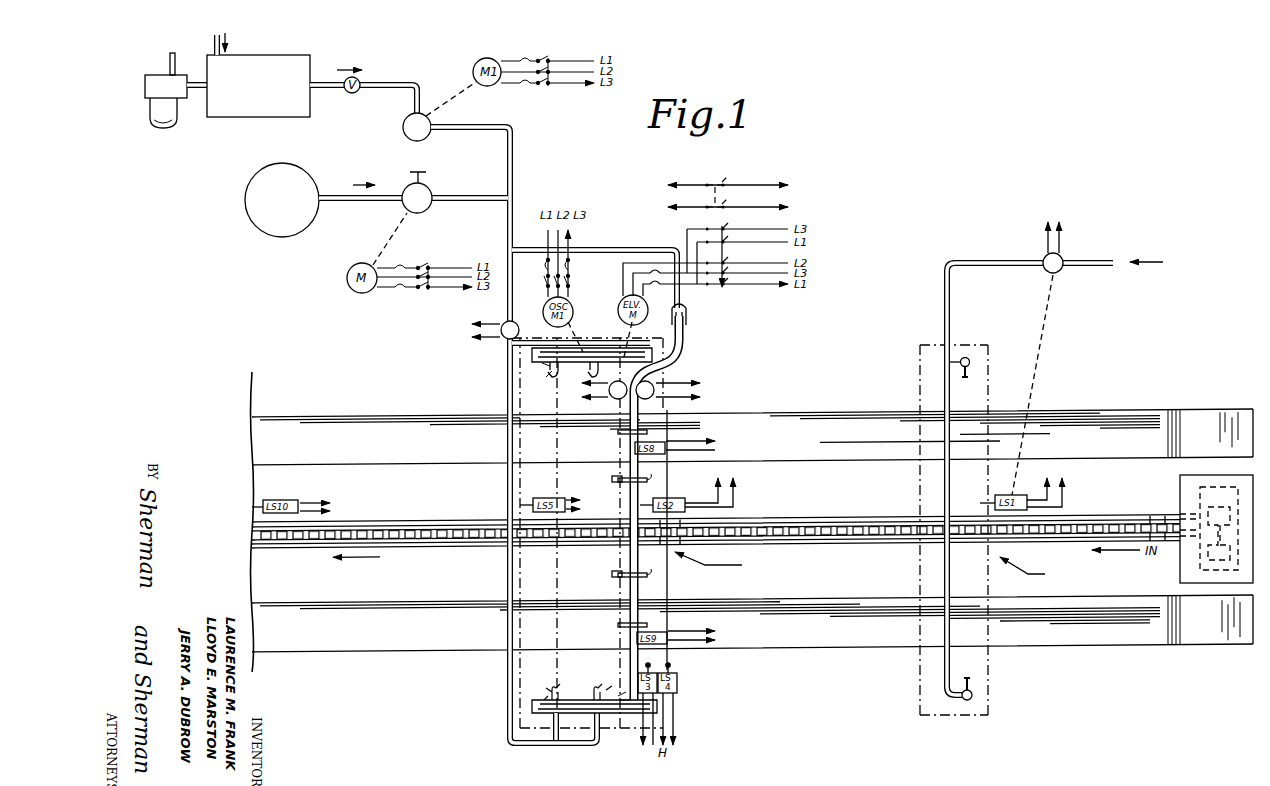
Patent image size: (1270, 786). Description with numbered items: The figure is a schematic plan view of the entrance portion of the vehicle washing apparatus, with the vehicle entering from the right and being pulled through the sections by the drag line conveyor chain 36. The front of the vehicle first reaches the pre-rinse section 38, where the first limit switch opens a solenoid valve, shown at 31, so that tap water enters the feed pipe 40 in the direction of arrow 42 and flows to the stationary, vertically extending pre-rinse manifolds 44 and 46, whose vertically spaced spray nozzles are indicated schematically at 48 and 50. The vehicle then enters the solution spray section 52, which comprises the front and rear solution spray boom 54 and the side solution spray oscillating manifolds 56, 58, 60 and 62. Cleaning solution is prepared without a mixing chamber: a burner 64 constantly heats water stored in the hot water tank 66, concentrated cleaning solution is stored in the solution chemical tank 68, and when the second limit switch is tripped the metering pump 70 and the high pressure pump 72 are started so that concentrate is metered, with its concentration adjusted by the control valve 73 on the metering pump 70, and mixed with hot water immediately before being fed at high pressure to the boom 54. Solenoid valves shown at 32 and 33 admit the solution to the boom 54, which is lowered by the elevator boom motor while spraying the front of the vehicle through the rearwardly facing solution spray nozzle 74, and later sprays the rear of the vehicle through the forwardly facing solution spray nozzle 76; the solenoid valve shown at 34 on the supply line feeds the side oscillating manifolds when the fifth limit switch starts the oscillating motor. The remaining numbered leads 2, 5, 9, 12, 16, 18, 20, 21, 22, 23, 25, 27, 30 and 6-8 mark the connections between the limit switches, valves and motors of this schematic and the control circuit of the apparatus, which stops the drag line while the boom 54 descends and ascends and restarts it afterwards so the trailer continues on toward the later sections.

The burner 64 is at (145, 86).
The hot water tank 66 is at (222, 120).
The solution chemical tank 68 is at (264, 174).
The metering pump 70 is at (430, 192).
The high pressure pump 72 is at (403, 124).
The control valve 73 is at (421, 172).
The solenoid valve 34 is at (510, 330).
The control line 25 is at (477, 337).
The control line 2 is at (755, 297).
The side solution spray oscillating manifold 56 is at (595, 358).
The side solution spray oscillating manifold 58 is at (553, 372).
The solenoid valve 33 is at (618, 390).
The solenoid valve 32 is at (645, 390).
The control line 18 is at (585, 397).
The control line 16 is at (688, 397).
The control line 5 is at (675, 595).
The control line 9 is at (681, 601).
The control line 30 is at (325, 511).
The control line 27 is at (583, 509).
The forwardly facing solution spray nozzle 76 is at (612, 478).
The rearwardly facing solution spray nozzle 74 is at (640, 592).
The drag line conveyor chain 36 is at (842, 530).
The front and rear solution spray boom 54 is at (656, 528).
The solution spray section 52 is at (758, 571).
The control lines 6-8 is at (716, 484).
The feed pipe 40 is at (998, 262).
The solenoid valve 31 is at (1053, 263).
The arrow 42 is at (1146, 252).
The pre-rinse manifold 44 is at (968, 356).
The spray nozzle 48 is at (970, 372).
The control line 12 is at (1049, 356).
The spray nozzle 50 is at (972, 682).
The pre-rinse manifold 46 is at (975, 699).
The side solution spray oscillating manifold 60 is at (594, 710).
The side solution spray oscillating manifold 62 is at (591, 692).
The control line 20 is at (767, 185).
The control line 21 is at (766, 207).
The control line 22 is at (681, 185).
The control line 23 is at (681, 207).
The pre-rinse section 38 is at (1061, 577).